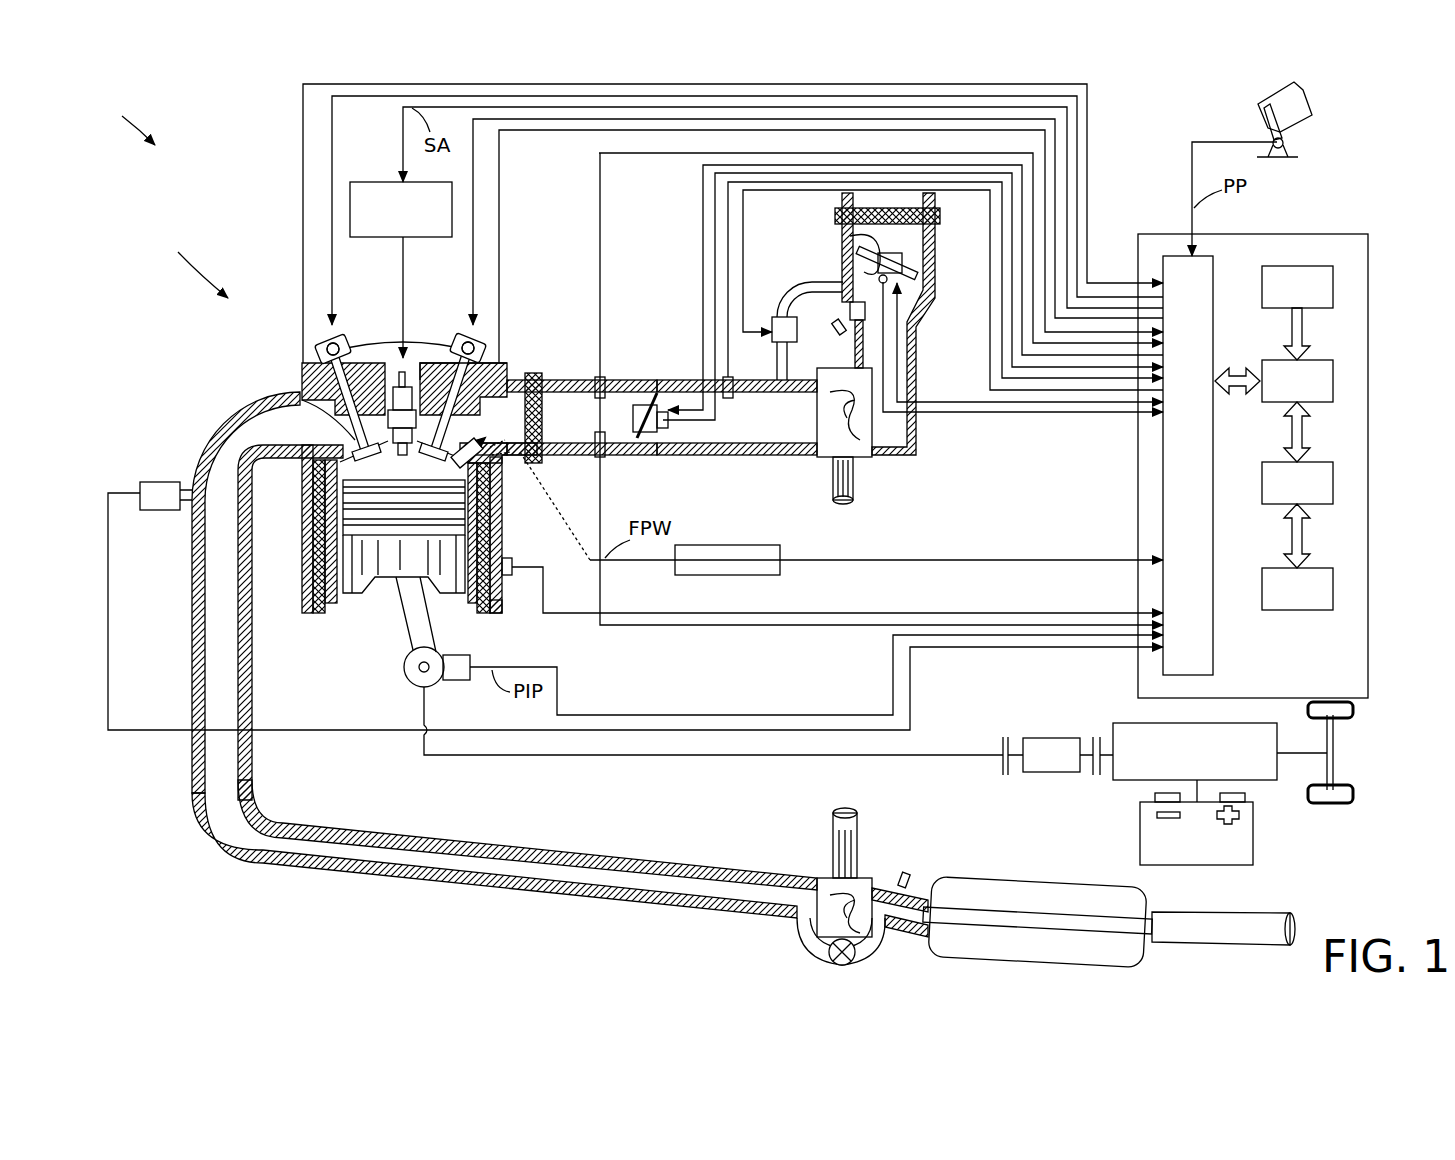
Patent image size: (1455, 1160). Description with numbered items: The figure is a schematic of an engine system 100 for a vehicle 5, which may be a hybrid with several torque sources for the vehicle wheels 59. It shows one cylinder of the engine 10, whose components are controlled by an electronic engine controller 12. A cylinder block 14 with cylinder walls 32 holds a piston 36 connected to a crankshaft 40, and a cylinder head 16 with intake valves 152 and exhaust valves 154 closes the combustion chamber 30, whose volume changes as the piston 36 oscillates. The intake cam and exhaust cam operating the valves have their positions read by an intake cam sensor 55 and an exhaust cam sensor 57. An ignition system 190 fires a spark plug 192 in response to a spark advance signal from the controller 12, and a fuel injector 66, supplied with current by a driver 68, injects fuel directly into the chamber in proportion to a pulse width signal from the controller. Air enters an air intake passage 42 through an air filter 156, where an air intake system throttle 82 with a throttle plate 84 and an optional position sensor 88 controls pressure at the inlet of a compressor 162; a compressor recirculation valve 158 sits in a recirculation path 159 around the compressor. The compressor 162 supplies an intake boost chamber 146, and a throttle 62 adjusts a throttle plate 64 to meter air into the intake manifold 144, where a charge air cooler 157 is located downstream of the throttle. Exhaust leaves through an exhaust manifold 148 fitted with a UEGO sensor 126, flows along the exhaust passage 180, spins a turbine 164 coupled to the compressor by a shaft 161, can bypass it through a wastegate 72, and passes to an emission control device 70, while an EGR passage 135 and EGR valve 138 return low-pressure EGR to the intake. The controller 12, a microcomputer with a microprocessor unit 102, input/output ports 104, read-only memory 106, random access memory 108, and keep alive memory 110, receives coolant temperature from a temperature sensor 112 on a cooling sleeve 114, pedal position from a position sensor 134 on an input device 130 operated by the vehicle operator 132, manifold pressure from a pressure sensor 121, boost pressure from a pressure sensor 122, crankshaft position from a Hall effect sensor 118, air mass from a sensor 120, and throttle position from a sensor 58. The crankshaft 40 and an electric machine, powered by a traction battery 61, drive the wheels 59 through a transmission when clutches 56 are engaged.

The vehicle 5 is at (1385, 736).
The engine 10 is at (187, 267).
The electronic engine controller 12 is at (1368, 240).
The cylinder block 14 is at (296, 515).
The cylinder head 16 is at (518, 362).
The combustion chamber 30 is at (398, 463).
The cylinder walls 32 is at (345, 608).
The piston 36 is at (385, 563).
The crankshaft 40 is at (410, 690).
The air intake passage 42 is at (878, 249).
The intake cam sensor 55 is at (480, 352).
The clutch 56 is at (1002, 745).
The exhaust cam sensor 57 is at (325, 350).
The throttle position sensor 58 is at (662, 432).
The vehicle wheels 59 is at (1335, 803).
The traction battery 61 is at (1195, 866).
The throttle 62 is at (652, 393).
The throttle plate 64 is at (658, 408).
The fuel injector 66 is at (485, 465).
The driver 68 is at (746, 545).
The emission control device 70 is at (930, 946).
The wastegate 72 is at (829, 952).
The air intake system throttle 82 is at (855, 262).
The throttle plate 84 is at (856, 251).
The position sensor 88 is at (847, 266).
The engine system 100 is at (119, 122).
The microprocessor unit 102 is at (1333, 385).
The input/output ports 104 is at (1213, 266).
The read-only memory 106 is at (1333, 290).
The random access memory 108 is at (1333, 488).
The keep alive memory 110 is at (1333, 593).
The temperature sensor 112 is at (512, 560).
The cooling sleeve 114 is at (497, 600).
The Hall effect sensor 118 is at (456, 682).
The air mass sensor 120 is at (603, 458).
The pressure sensor 121 is at (601, 377).
The pressure sensor 122 is at (732, 378).
The UEGO sensor 126 is at (140, 484).
The input device 130 is at (1262, 118).
The vehicle operator 132 is at (1305, 100).
The position sensor 134 is at (1292, 153).
The EGR passage 135 is at (843, 330).
The EGR valve 138 is at (850, 310).
The intake manifold 144 is at (559, 435).
The intake boost chamber 146 is at (721, 435).
The exhaust manifold 148 is at (289, 438).
The intake valves 152 is at (472, 448).
The exhaust valves 154 is at (352, 408).
The air filter 156 is at (940, 215).
The charge air cooler 157 is at (525, 460).
The compressor recirculation valve 158 is at (785, 316).
The compressor recirculation path 159 is at (858, 358).
The shaft 161 is at (855, 486).
The compressor 162 is at (873, 456).
The turbine 164 is at (820, 878).
The exhaust passage 180 is at (452, 905).
The ignition system 190 is at (390, 183).
The spark plug 192 is at (407, 368).